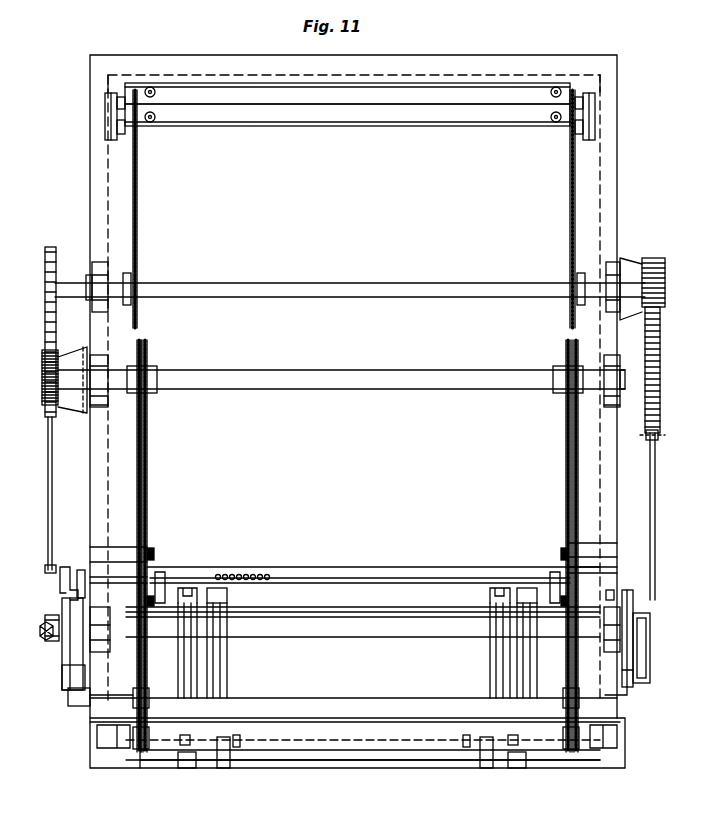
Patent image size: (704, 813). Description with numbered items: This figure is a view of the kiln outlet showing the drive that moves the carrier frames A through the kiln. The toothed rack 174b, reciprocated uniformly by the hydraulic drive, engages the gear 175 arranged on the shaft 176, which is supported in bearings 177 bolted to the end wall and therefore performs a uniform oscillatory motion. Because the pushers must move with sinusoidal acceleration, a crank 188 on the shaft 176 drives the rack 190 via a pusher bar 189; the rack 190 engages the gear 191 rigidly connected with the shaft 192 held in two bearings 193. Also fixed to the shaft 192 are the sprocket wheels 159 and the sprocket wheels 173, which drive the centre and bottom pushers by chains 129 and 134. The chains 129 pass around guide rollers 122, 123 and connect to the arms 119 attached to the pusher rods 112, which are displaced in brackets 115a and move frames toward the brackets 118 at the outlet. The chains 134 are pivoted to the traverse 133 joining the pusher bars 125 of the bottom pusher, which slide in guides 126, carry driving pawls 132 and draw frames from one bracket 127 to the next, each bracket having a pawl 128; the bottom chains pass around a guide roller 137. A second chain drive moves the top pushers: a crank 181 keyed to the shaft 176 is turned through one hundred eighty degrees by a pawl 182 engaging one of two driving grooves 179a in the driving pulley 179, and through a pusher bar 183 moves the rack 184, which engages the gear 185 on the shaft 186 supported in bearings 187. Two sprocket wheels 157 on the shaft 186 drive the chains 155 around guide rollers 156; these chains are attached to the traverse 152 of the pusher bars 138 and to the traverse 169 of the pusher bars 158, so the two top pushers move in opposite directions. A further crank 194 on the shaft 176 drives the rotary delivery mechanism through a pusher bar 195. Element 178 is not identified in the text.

The pusher bars 138 is at (153, 87).
The traverse 152 is at (480, 90).
The traverse 169 is at (466, 118).
The guide rollers 156 is at (110, 130).
The pusher bars 158 is at (156, 122).
The chains 155 is at (140, 209).
The shaft 186 is at (360, 283).
The bearings 187 is at (93, 262).
The gear 185 is at (655, 262).
The rack 190 is at (46, 283).
The sprocket wheels 157 is at (135, 305).
The gear 191 is at (44, 354).
The sprocket wheels 173 is at (134, 360).
The sprocket wheels 159 is at (150, 364).
The shaft 192 is at (358, 372).
The rack 184 is at (653, 365).
The bearings 193 is at (98, 405).
The chains 129 is at (147, 438).
The chains 134 is at (140, 472).
The pusher bar 189 is at (52, 478).
The pusher bar 183 is at (652, 480).
The guide roller 122 is at (152, 548).
The guide roller 123 is at (152, 596).
The pusher rods 112 is at (190, 588).
The arms 119 is at (160, 572).
The brackets 115a is at (210, 595).
The frame A is at (312, 578).
The brackets 118 is at (228, 598).
The shaft 176 is at (352, 634).
The bearings 177 is at (106, 650).
The guide roller 137 is at (148, 690).
The driving pawls 132 is at (180, 738).
The pusher bars 125 is at (186, 745).
The pawl 128 is at (240, 738).
The guides 126 is at (188, 768).
The brackets 127 is at (228, 768).
The traverse 133 is at (396, 760).
The driving pulley 179 is at (633, 603).
The driving grooves 179a is at (612, 590).
The crank 181 is at (647, 655).
The pawl 182 is at (628, 680).
The crank 188 is at (66, 590).
The pusher bar 195 is at (47, 626).
The crank 194 is at (50, 640).
The gear 175 is at (72, 662).
The rack 174b is at (70, 682).
The bracket 178 is at (78, 700).